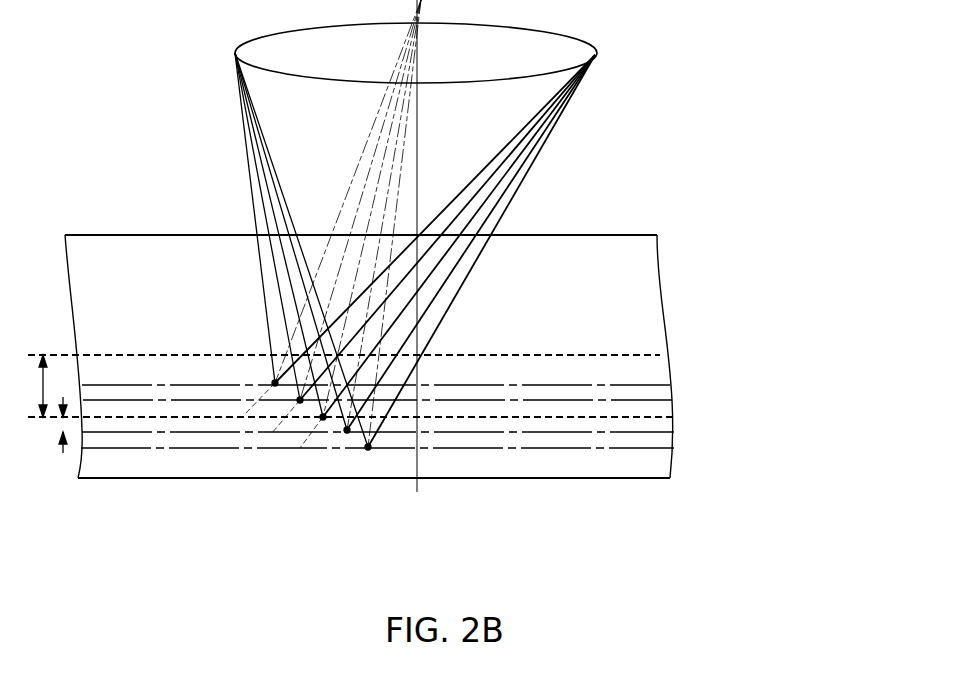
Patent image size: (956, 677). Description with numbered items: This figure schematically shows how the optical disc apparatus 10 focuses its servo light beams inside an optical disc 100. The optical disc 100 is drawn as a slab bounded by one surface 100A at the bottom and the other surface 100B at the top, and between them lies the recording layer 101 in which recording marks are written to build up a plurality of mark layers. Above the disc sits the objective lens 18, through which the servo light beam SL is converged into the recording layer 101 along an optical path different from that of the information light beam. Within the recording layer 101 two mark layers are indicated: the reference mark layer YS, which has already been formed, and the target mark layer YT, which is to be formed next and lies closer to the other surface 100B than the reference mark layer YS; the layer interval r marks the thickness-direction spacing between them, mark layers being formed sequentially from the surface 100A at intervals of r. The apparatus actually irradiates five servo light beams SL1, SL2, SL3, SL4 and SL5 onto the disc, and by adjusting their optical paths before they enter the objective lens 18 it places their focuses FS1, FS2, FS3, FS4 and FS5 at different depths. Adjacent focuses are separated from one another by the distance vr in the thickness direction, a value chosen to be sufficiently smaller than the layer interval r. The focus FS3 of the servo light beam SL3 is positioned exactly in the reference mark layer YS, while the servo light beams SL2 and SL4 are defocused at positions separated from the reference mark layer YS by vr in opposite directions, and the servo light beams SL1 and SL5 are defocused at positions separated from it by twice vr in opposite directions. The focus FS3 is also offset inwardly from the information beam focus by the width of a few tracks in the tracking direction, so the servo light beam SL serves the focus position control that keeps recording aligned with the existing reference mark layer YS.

The optical disc apparatus 10 is at (100, 38).
The objective lens 18 is at (575, 31).
The optical disc 100 is at (77, 233).
The surface of optical disc 100A is at (600, 478).
The other surface of optical disc 100B is at (657, 233).
The recording layer 101 is at (640, 259).
The target mark layer YT is at (632, 352).
The reference mark layer YS is at (640, 415).
The servo light beam SL is at (648, 70).
The first servo light beam SL1 is at (503, 215).
The second servo light beam SL2 is at (510, 183).
The third servo light beam SL3 is at (538, 148).
The fourth servo light beam SL4 is at (557, 115).
The fifth servo light beam SL5 is at (575, 95).
The focus of first servo light beam FS1 is at (368, 447).
The focus of second servo light beam FS2 is at (347, 430).
The focus of third servo light beam FS3 is at (323, 417).
The focus of fourth servo light beam FS4 is at (300, 400).
The focus of fifth servo light beam FS5 is at (275, 383).
The layer interval r is at (42, 385).
The focus separation distance vr is at (63, 432).